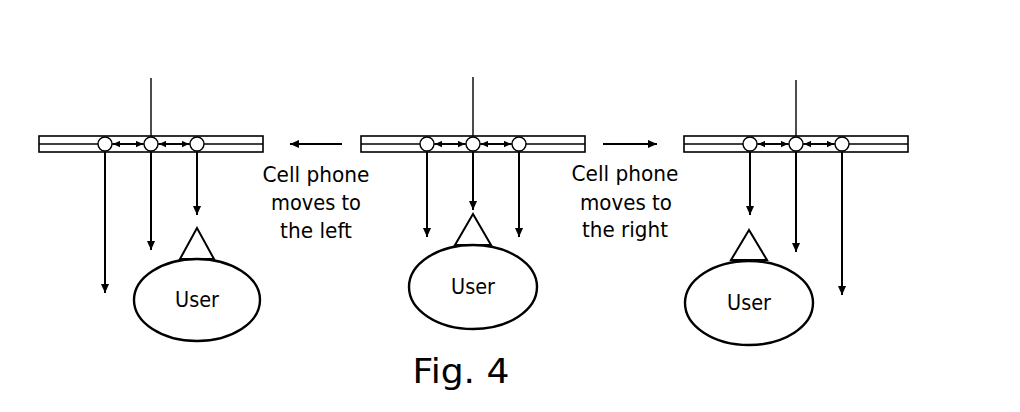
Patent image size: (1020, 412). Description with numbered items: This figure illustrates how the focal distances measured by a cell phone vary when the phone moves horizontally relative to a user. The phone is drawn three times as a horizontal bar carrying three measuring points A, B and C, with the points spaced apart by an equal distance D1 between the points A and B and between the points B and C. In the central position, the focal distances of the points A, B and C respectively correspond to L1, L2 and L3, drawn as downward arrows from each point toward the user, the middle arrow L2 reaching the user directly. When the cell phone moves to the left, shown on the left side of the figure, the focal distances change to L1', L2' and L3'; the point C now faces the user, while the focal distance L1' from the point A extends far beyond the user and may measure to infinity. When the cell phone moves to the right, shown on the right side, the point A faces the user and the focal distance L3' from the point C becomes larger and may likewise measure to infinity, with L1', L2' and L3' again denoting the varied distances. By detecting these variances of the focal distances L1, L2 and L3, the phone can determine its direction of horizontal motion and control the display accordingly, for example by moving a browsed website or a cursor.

The point A is at (427, 144).
The point B is at (473, 144).
The point C is at (519, 144).
The distance between points D1 is at (473, 129).
The focal distance L1 is at (413, 194).
The focal distance L2 is at (459, 181).
The focal distance L3 is at (504, 194).
The varied focal distance L1' is at (411, 222).
The varied focal distance L2' is at (457, 202).
The varied focal distance L3' is at (503, 223).